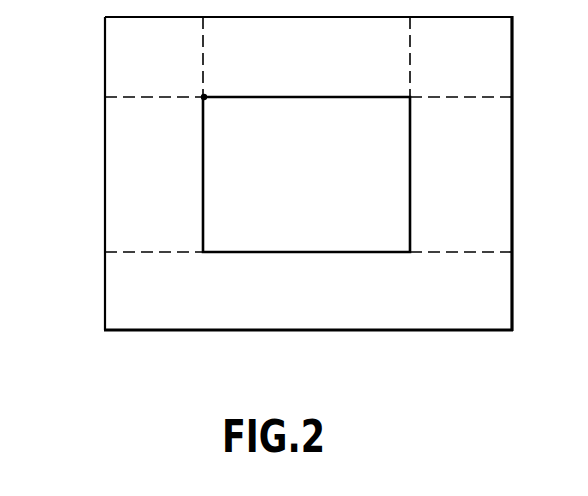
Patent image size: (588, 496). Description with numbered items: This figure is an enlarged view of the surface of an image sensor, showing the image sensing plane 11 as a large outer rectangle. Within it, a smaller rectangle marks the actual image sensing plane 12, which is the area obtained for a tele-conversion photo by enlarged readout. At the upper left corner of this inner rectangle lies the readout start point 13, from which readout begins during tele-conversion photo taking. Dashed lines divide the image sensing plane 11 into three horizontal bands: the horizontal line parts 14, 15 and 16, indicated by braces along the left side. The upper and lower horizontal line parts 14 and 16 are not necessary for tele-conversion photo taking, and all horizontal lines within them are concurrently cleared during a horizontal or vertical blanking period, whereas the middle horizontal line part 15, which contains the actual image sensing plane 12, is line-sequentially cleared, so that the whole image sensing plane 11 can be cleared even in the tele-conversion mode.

The image sensing plane 11 is at (514, 70).
The actual image sensing plane 12 is at (412, 183).
The readout start point 13 is at (205, 96).
The horizontal line part 14 is at (78, 17).
The horizontal line part 15 is at (78, 99).
The horizontal line part 16 is at (78, 256).